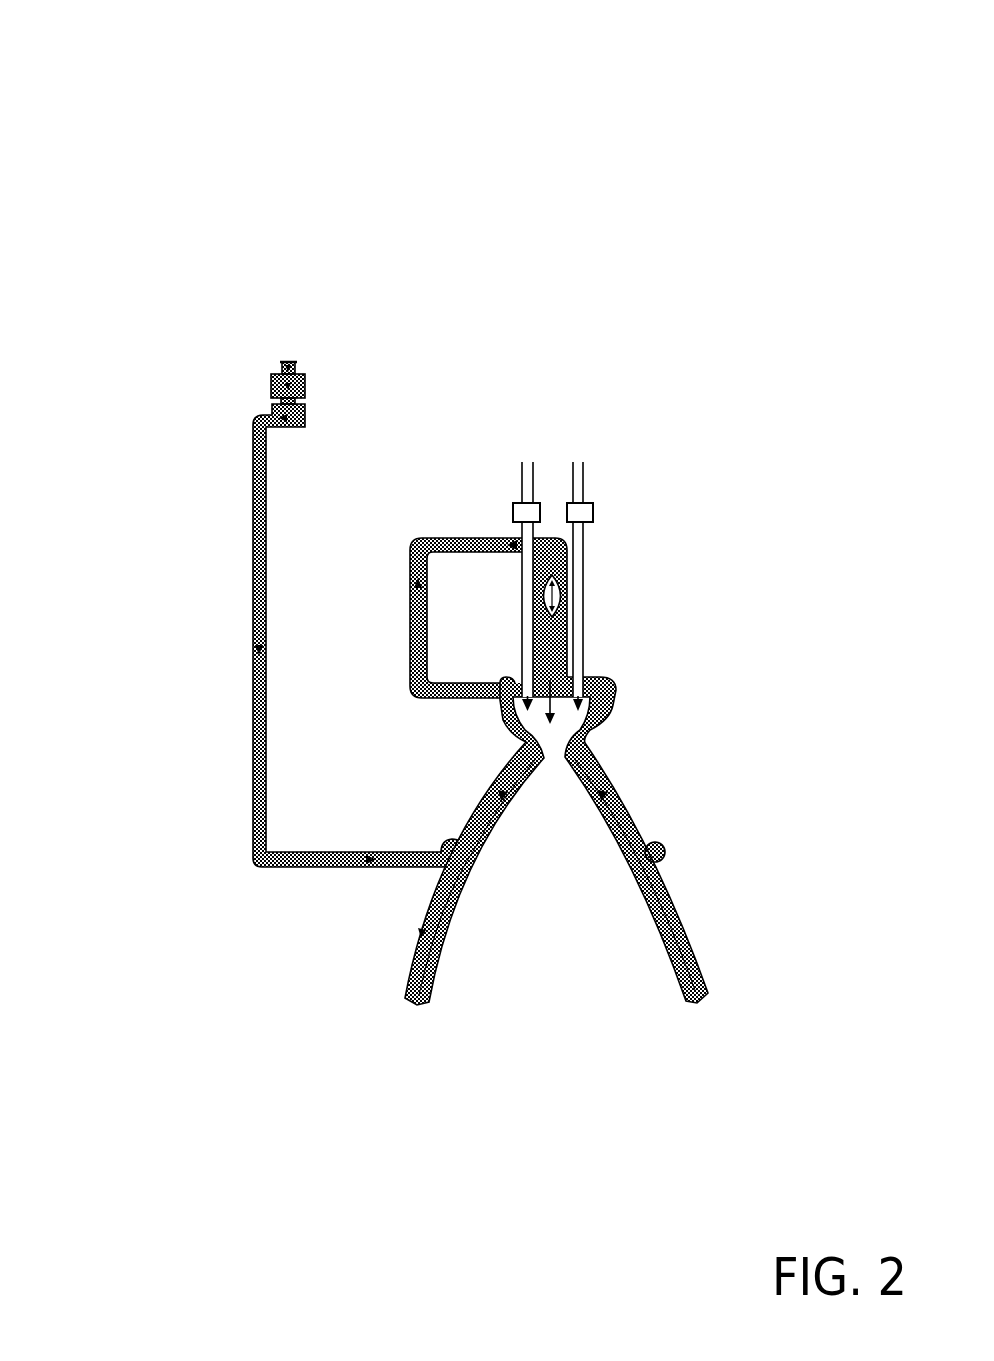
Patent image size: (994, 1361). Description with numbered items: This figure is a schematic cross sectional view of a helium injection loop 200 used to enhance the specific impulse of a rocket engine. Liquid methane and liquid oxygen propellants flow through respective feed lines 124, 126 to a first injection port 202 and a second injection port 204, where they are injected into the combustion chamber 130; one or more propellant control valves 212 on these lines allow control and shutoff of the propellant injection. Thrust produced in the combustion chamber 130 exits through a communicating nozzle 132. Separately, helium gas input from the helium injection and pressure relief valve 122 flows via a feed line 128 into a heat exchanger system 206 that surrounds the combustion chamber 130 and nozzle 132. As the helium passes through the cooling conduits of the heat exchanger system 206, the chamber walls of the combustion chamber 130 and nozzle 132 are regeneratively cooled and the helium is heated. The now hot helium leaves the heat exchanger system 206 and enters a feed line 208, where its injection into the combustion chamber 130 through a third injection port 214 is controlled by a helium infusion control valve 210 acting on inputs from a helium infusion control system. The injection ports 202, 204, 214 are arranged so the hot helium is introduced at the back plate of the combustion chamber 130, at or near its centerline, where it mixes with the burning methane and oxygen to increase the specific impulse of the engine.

The fluid delivery system 200 is at (149, 91).
The helium injection and pressure relief valve 122 is at (272, 391).
The feed line 128 is at (258, 654).
The feed line 124 is at (525, 488).
The feed line 126 is at (583, 486).
The propellant control valves 212 is at (513, 512).
The feed line 208 is at (420, 666).
The helium infusion control valve 210 is at (560, 590).
The injection port 214 is at (560, 660).
The injection port 202 is at (527, 682).
The injection port 204 is at (587, 667).
The combustion chamber 130 is at (580, 722).
The nozzle 132 is at (518, 836).
The heat exchanger system 206 is at (421, 906).